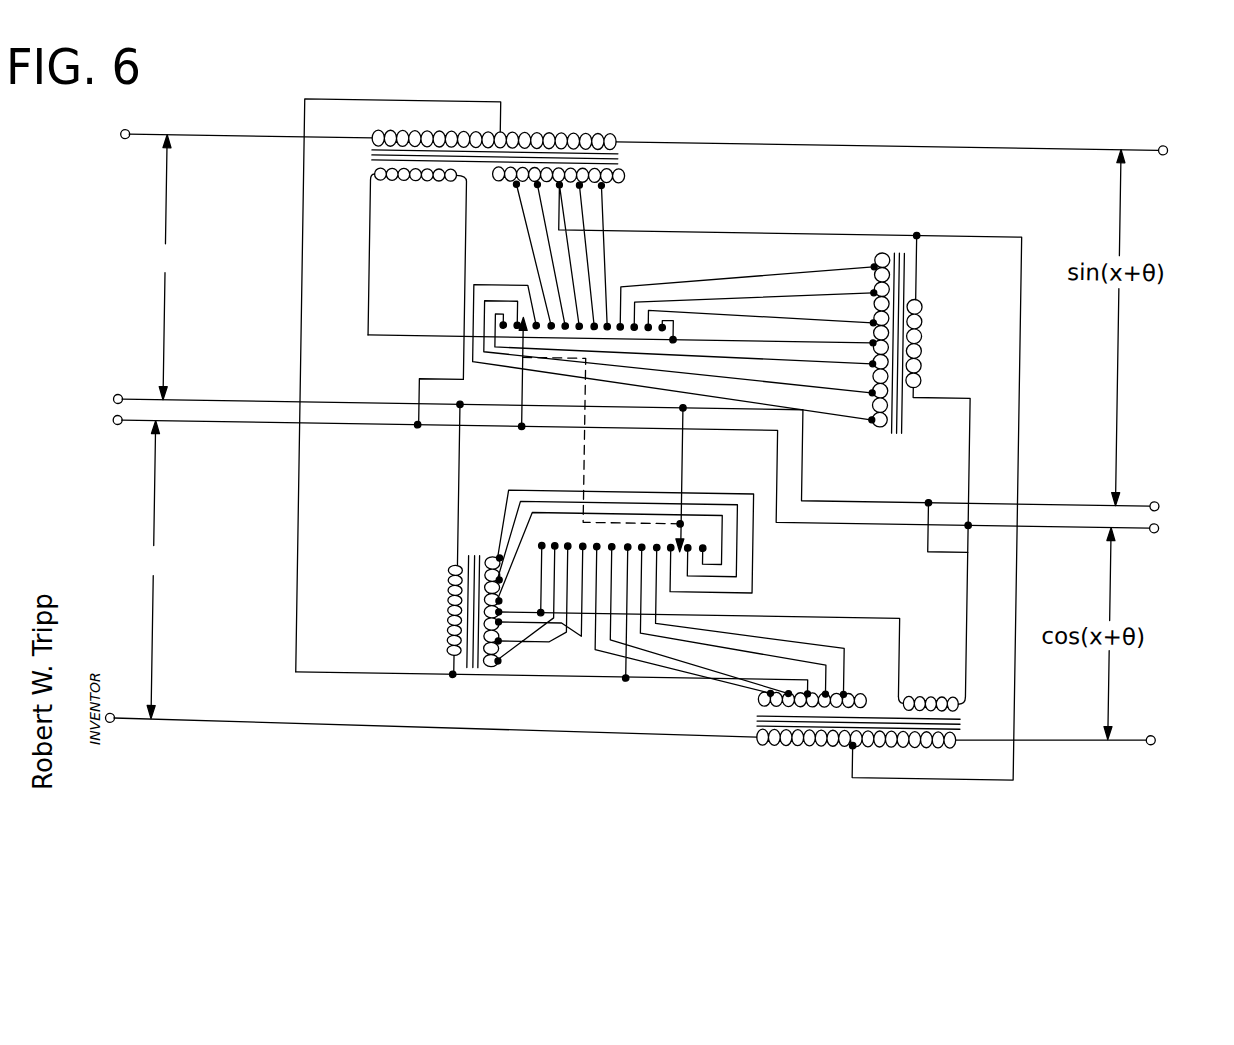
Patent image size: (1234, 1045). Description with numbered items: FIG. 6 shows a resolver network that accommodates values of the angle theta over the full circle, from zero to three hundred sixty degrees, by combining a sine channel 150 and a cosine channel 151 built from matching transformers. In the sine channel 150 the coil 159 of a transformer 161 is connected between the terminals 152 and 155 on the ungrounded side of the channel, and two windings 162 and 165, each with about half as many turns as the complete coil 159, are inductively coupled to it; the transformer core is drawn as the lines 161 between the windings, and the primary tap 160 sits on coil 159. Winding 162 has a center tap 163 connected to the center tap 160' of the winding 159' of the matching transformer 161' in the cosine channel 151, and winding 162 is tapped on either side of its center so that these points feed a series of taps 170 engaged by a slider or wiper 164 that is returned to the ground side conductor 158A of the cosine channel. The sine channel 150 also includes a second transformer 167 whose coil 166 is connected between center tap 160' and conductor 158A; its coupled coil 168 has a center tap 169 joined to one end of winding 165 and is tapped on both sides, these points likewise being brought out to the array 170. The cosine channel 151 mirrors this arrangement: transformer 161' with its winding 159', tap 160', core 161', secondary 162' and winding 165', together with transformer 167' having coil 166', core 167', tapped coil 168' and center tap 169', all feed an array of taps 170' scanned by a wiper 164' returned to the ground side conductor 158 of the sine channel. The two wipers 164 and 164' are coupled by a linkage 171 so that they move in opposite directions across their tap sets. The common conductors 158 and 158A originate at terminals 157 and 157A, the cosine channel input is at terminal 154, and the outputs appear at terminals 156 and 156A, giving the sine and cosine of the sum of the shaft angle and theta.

The sine channel 150 is at (231, 215).
The cosine channel 151 is at (224, 520).
The terminal 152 is at (120, 139).
The input terminal 154 is at (114, 714).
The terminal 155 is at (1160, 139).
The output terminal 156 is at (1159, 487).
The output terminal 156A is at (1158, 516).
The common terminal 157 is at (115, 395).
The common terminal 157A is at (116, 424).
The ground side conductor 158 is at (225, 398).
The ground side conductor 158A is at (222, 422).
The coil 159 is at (494, 124).
The primary winding tap 160 is at (417, 379).
The transformer 161 is at (526, 154).
The winding 162 is at (576, 186).
The center tap 163 is at (548, 190).
The slider or wiper 164 is at (664, 358).
The winding 165 is at (417, 296).
The coil 166 is at (939, 498).
The second transformer 167 is at (923, 361).
The coil 168 is at (865, 360).
The center tap 169 is at (620, 330).
The taps 170 is at (686, 294).
The linkage 171 is at (583, 449).
The slider or wiper 164' is at (700, 480).
The winding 165' is at (932, 680).
The coil 166' is at (554, 548).
The transformer 167' is at (436, 593).
The winding 168' is at (473, 584).
The center tap 169' is at (693, 640).
The array of taps 170' is at (671, 592).
The winding 159' is at (827, 746).
The center tap 160' is at (819, 756).
The transformer 161' is at (817, 719).
The winding 162' is at (770, 696).